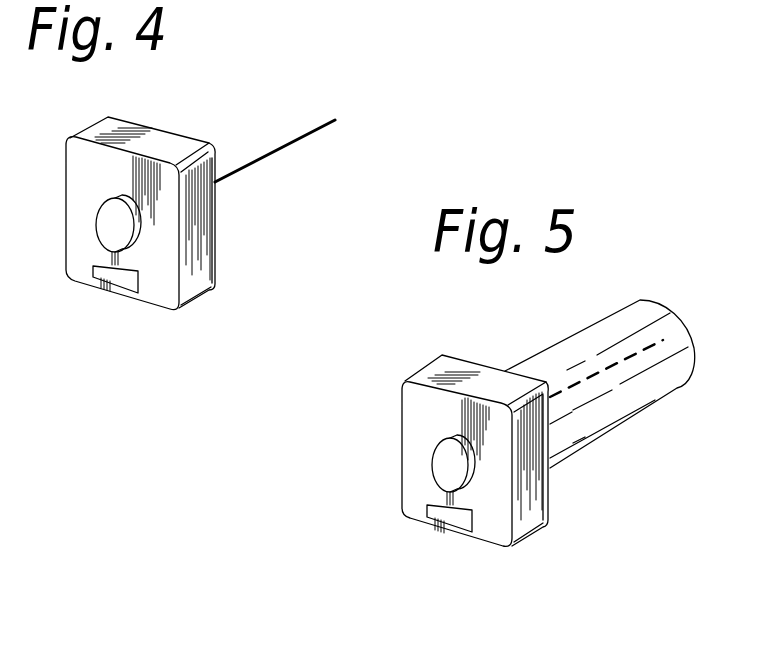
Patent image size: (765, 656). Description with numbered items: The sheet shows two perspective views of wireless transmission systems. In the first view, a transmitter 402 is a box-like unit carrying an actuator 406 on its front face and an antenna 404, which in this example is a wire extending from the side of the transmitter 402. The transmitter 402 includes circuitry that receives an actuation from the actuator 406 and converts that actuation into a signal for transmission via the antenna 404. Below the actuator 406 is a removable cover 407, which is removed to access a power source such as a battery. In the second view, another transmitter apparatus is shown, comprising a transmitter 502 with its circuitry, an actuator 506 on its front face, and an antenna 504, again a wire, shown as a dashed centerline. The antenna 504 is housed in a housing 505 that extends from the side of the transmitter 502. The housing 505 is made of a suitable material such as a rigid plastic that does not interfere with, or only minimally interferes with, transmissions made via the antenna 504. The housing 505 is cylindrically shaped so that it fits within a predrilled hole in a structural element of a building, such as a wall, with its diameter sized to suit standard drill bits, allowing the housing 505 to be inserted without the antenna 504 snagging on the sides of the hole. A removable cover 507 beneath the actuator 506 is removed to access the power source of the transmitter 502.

In FIG. 4, the transmitter 402 is at (138, 128).
In FIG. 4, the antenna 404 is at (267, 152).
In FIG. 4, the actuator 406 is at (118, 232).
In FIG. 4, the removable cover 407 is at (125, 282).
In FIG. 5, the transmitter 502 is at (415, 372).
In FIG. 5, the antenna 504 is at (595, 375).
In FIG. 5, the housing 505 is at (667, 302).
In FIG. 5, the actuator 506 is at (438, 463).
In FIG. 5, the removable cover 507 is at (433, 508).